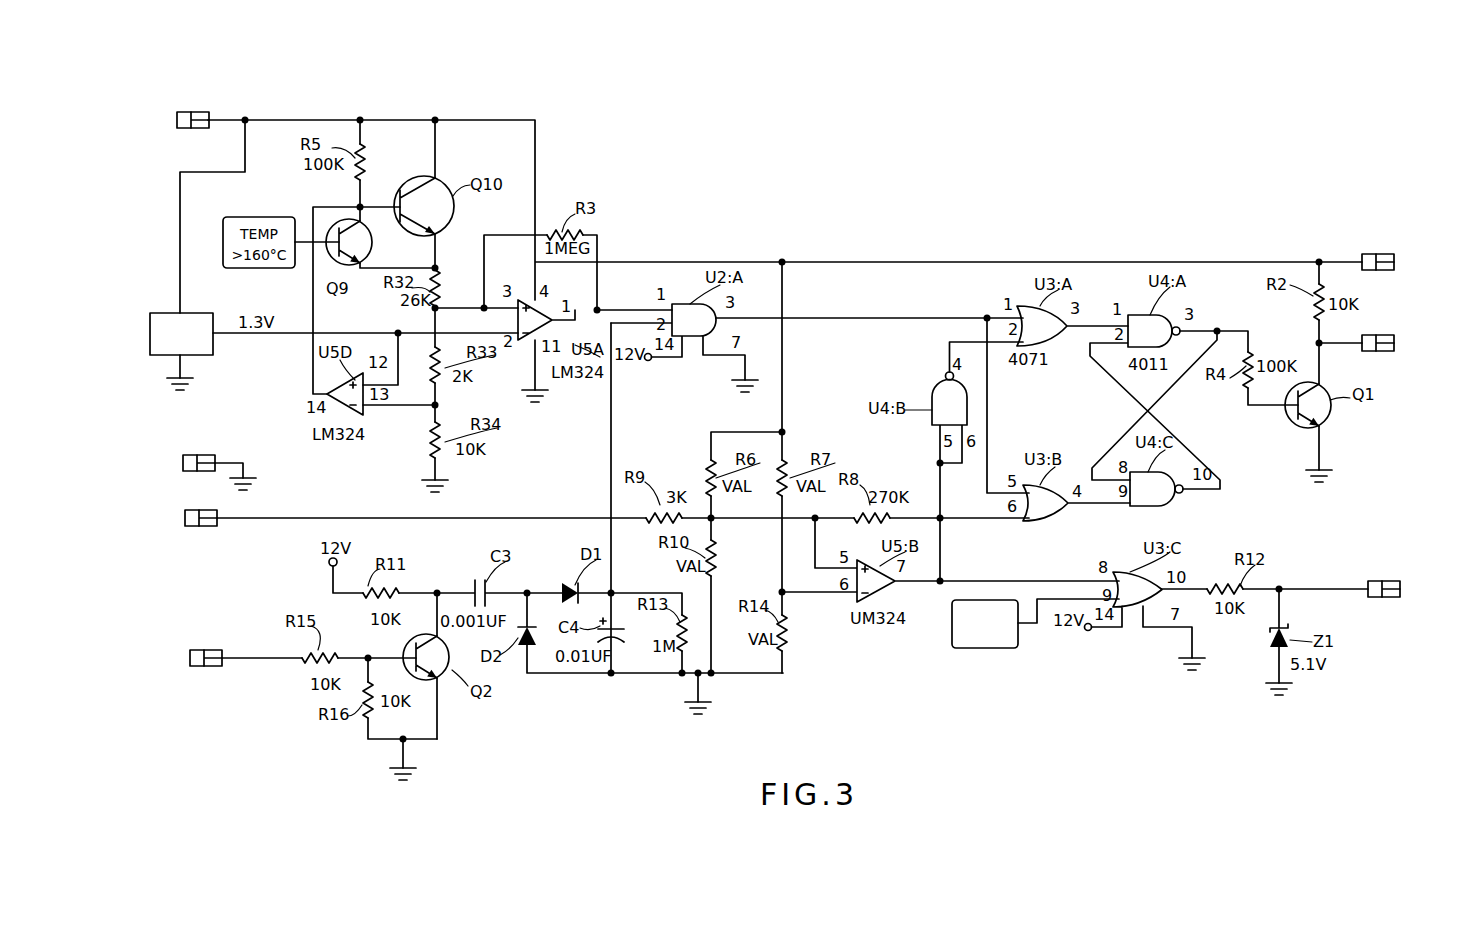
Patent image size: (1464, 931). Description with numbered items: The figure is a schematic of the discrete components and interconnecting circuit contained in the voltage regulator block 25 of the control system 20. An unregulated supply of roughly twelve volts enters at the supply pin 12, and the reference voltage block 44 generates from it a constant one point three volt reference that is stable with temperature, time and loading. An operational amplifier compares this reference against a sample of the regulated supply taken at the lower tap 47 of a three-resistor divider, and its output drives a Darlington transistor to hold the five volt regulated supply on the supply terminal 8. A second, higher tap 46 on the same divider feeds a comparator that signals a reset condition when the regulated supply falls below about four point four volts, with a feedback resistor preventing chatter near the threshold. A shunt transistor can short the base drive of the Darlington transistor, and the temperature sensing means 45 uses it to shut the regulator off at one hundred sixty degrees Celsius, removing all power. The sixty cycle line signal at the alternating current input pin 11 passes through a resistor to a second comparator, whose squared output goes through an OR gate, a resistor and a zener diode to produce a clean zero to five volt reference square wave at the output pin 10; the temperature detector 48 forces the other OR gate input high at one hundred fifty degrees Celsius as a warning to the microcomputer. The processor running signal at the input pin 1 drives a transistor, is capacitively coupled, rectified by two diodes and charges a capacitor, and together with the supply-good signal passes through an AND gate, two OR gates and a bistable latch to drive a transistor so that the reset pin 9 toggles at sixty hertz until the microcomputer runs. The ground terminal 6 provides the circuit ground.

The PRUN pin 1 is at (179, 648).
The GND terminal 6 is at (198, 461).
The VCC terminal 8 is at (1397, 253).
The RESET pin 9 is at (1405, 334).
The ACREF pin 10 is at (1411, 577).
The ACIN pin 11 is at (178, 510).
The VDD pin 12 is at (172, 114).
The control system 20 is at (980, 176).
The voltage regulator block 25 is at (1030, 216).
The VREF block 44 is at (213, 342).
The temperature sensing means 45 is at (253, 217).
The voltage divider tap 46 is at (430, 311).
The voltage divider tap 47 is at (447, 404).
The temperature detector 48 is at (952, 626).